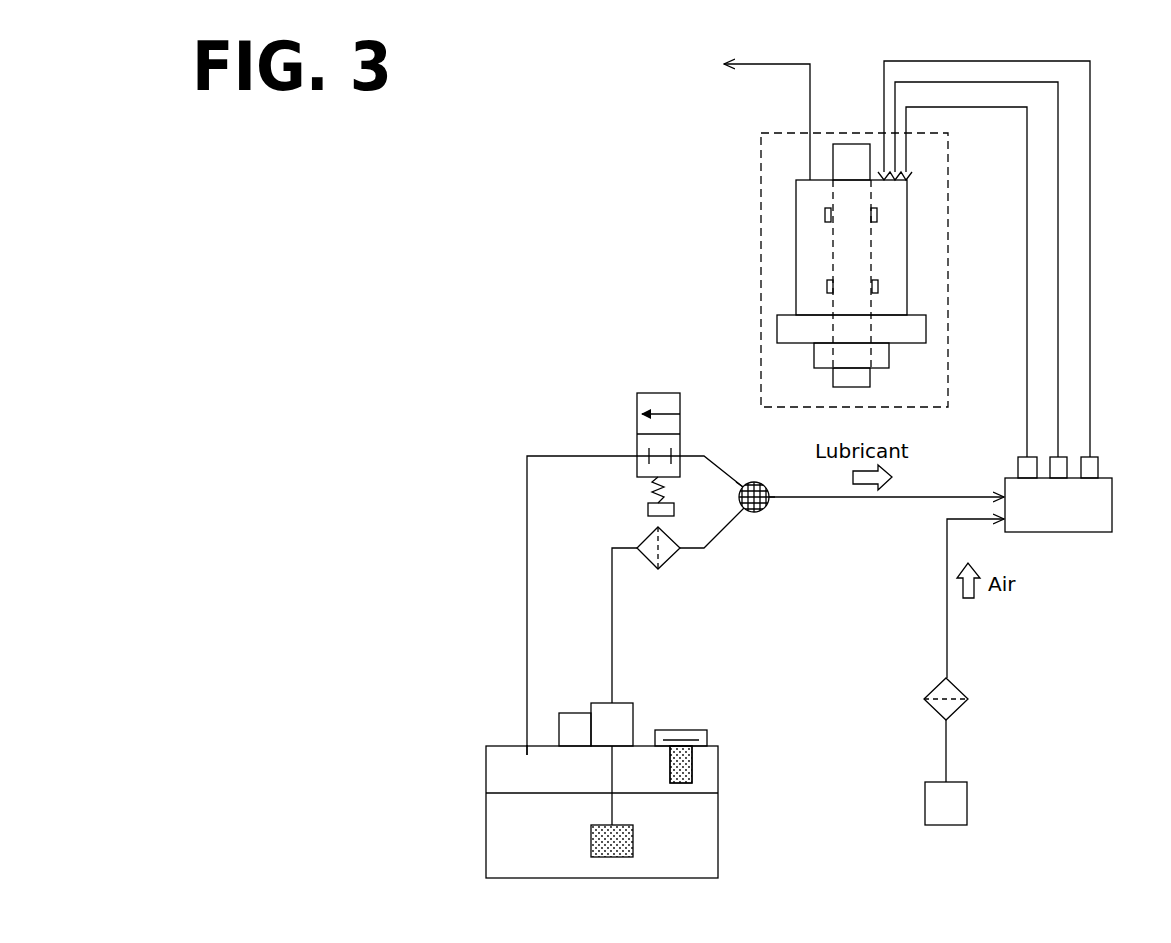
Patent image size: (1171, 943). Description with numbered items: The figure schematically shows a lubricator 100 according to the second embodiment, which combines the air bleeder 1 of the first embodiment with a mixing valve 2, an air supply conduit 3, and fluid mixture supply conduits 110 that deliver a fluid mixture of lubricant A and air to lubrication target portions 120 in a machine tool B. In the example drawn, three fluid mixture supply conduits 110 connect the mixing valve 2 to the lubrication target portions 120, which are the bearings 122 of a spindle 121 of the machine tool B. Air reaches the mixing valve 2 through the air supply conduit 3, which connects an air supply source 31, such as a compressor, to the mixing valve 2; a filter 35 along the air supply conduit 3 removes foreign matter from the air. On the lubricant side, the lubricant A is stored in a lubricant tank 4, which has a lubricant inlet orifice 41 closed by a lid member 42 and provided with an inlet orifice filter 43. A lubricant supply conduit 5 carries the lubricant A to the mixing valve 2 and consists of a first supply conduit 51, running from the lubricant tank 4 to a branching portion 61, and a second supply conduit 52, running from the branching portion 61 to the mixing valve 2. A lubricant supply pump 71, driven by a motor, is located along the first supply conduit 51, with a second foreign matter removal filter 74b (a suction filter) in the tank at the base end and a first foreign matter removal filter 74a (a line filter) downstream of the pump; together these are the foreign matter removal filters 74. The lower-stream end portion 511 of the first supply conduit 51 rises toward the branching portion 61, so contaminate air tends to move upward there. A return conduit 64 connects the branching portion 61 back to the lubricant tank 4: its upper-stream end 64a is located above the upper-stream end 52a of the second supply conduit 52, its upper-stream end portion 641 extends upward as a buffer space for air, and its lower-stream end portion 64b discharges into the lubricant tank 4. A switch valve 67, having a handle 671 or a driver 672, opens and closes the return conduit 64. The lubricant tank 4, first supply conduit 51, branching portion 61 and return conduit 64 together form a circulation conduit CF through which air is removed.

The lubricator 100 is at (458, 153).
The air bleeder 1 is at (424, 456).
The fluid mixture supply conduits 110 is at (1090, 290).
The lubrication target portions 120 is at (877, 208).
The spindle 121 is at (845, 252).
The bearings 122 is at (877, 213).
The machine tool B is at (948, 330).
The mixing valve 2 is at (1085, 515).
The air supply conduit 3 is at (950, 625).
The air supply source 31 is at (967, 792).
The filter 35 is at (956, 710).
The lubricant tank 4 is at (718, 812).
The lubricant A is at (705, 858).
The lubricant inlet orifice 41 is at (692, 745).
The lid member 42 is at (695, 730).
The inlet orifice filter 43 is at (683, 775).
The lubricant supply conduit 5 is at (808, 600).
The first supply conduit 51 is at (613, 633).
The lower-stream end portion 511 is at (720, 533).
The second supply conduit 52 is at (870, 500).
The upper-stream end 52a is at (770, 500).
The branching portion 61 is at (757, 515).
The return conduit 64 is at (738, 447).
The upper-stream end portion 641 is at (725, 470).
The upper-stream end 64a is at (745, 485).
The lower-stream end portion 64b is at (522, 752).
The switch valve 67 is at (648, 393).
The handle 671 is at (608, 498).
The driver 672 is at (648, 506).
The lubricant supply pump 71 is at (633, 722).
The foreign matter removal filter 74 is at (674, 719).
The first foreign matter removal filter 74a is at (670, 557).
The second foreign matter removal filter 74b is at (627, 845).
The circulation conduit CF is at (568, 455).